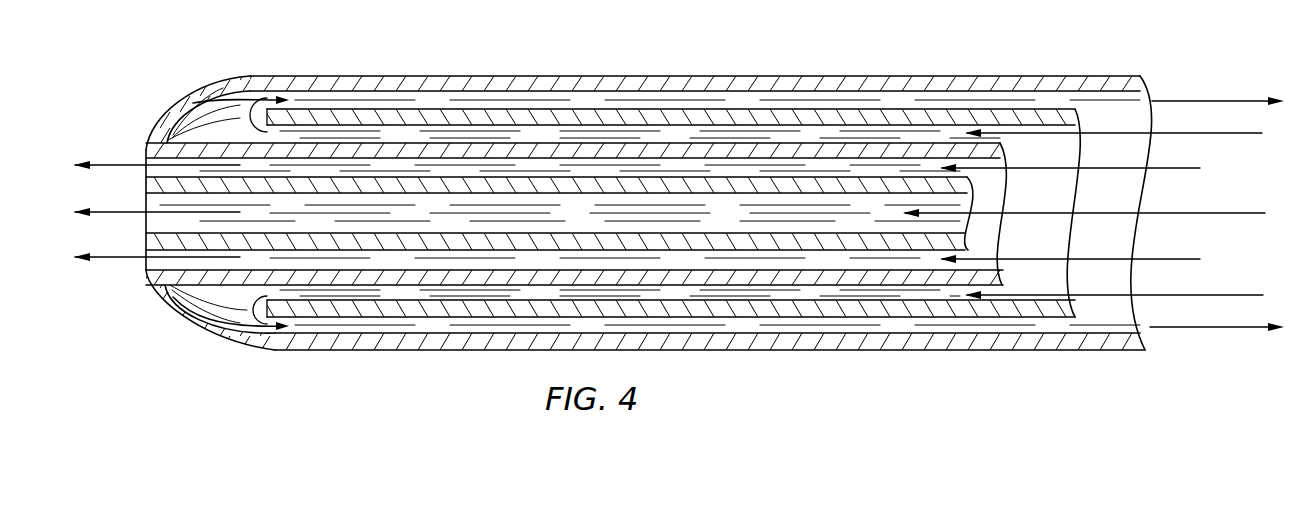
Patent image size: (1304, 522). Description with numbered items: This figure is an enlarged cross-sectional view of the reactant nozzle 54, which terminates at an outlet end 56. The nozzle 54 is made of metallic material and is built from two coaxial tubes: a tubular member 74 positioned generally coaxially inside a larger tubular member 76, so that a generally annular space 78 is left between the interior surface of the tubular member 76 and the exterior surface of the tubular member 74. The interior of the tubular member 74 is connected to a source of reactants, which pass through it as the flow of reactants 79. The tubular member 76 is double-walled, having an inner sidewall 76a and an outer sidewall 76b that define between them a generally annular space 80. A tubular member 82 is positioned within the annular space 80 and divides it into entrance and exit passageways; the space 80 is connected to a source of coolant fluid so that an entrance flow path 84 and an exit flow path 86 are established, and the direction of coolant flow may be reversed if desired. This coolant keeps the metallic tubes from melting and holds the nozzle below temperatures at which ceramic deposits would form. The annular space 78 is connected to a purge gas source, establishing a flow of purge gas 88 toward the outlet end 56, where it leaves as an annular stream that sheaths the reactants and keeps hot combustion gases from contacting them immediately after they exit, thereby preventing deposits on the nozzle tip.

The reactant nozzle 54 is at (341, 62).
The outlet end 56 is at (146, 195).
The tubular member 74 is at (419, 193).
The tubular member 76 is at (548, 78).
The inner sidewall 76a is at (487, 150).
The outer sidewall 76b is at (672, 78).
The annular space 78 is at (146, 152).
The flow of reactants 79 is at (1248, 213).
The annular space 80 is at (232, 80).
The tubular member 82 is at (737, 108).
The entrance flow path 84 is at (1243, 135).
The exit flow path 86 is at (1226, 100).
The flow of purge gas 88 is at (1183, 170).